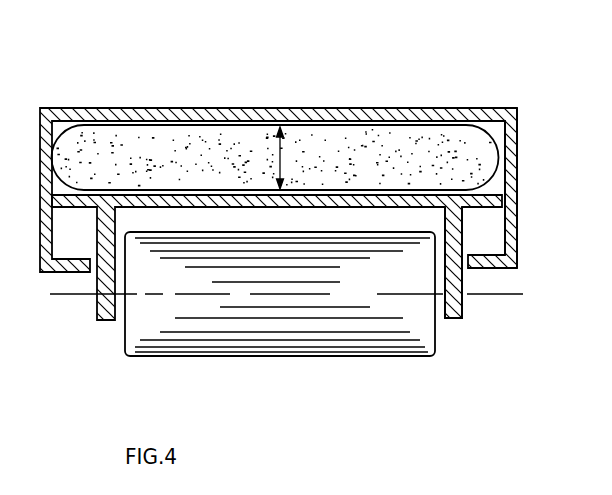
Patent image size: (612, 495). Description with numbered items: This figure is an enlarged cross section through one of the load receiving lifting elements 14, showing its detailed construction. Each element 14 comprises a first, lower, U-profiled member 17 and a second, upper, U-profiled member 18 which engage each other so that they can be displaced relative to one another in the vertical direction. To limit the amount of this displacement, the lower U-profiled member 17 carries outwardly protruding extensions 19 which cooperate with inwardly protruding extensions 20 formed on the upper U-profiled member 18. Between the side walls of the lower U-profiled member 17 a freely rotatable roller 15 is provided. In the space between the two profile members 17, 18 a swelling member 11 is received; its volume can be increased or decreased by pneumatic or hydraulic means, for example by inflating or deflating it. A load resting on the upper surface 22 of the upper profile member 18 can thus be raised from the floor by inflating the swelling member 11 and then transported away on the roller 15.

The lifting element 14 is at (232, 78).
The upper surface 22 is at (143, 108).
The swelling member 11 is at (372, 133).
The second, upper U-profiled member 18 is at (476, 107).
The outwardly protruding extensions 19 is at (493, 208).
The inwardly protruding extensions 20 is at (493, 273).
The first, lower U-profiled member 17 is at (455, 304).
The roller 15 is at (370, 333).